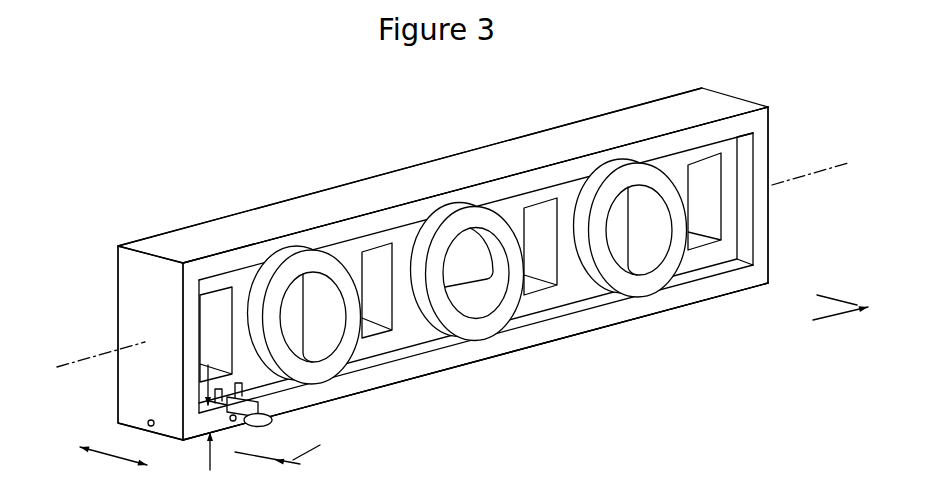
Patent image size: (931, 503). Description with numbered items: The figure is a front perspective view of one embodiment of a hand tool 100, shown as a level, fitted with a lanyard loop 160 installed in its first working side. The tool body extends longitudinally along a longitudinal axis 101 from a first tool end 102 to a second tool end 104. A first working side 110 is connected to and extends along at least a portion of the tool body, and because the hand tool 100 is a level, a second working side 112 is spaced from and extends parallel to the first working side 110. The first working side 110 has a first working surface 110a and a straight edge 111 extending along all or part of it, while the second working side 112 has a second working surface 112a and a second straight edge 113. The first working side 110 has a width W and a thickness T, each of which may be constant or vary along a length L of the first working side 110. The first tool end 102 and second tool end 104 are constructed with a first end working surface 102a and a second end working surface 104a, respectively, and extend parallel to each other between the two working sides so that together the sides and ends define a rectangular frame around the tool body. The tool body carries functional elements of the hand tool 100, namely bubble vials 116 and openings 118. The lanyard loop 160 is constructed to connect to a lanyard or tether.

The hand tool 100 is at (252, 137).
The longitudinal axis 101 is at (68, 363).
The first tool end 102 is at (190, 317).
The first end working surface 102a is at (132, 280).
The second tool end 104 is at (760, 221).
The second end working surface 104a is at (770, 148).
The first working side 110 is at (428, 358).
The first working surface 110a is at (622, 326).
The straight edge 111 is at (542, 345).
The second working side 112 is at (395, 218).
The second working surface 112a is at (623, 132).
The second straight edge 113 is at (272, 204).
The bubble vials 116 is at (462, 267).
The openings 118 is at (548, 212).
The lanyard loop 160 is at (272, 420).
The width W is at (110, 457).
The thickness T is at (209, 458).
The length L is at (833, 315).